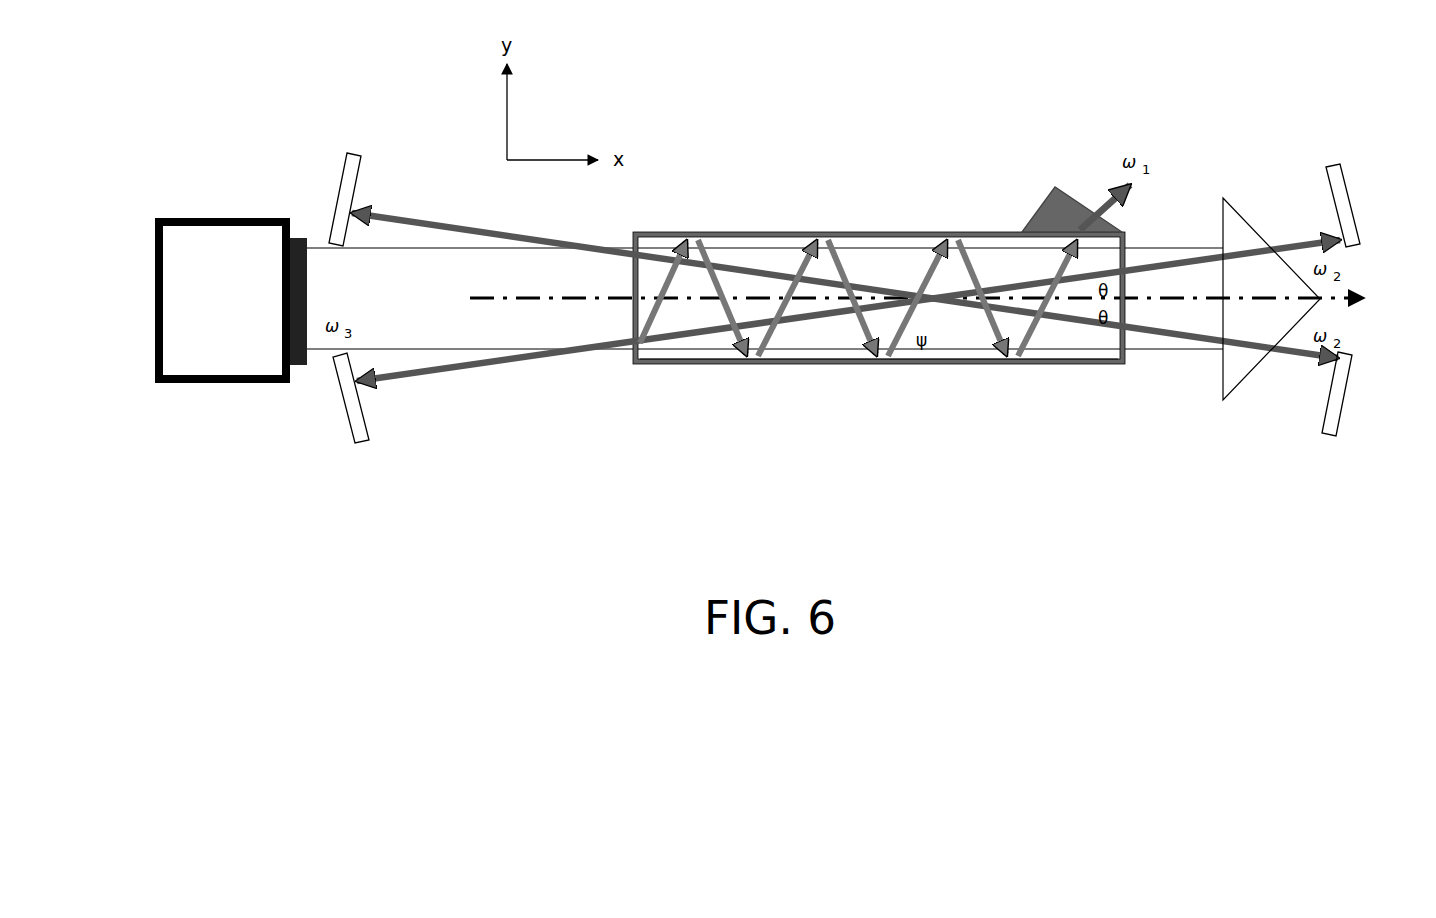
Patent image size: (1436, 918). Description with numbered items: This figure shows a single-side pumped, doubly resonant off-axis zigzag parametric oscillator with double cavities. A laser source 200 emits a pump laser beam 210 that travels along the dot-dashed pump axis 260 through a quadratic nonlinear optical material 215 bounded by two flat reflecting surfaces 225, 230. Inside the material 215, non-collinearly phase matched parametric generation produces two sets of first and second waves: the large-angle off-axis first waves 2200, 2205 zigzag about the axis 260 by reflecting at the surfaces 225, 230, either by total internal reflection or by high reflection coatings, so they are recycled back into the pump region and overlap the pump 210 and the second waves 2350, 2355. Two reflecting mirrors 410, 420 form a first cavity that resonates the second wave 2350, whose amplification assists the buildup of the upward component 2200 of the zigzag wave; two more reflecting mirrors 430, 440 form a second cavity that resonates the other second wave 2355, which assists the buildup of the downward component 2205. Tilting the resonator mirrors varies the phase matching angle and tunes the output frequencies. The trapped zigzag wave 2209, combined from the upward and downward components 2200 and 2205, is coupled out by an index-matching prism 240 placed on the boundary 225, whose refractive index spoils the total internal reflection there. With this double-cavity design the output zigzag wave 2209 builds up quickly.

The laser source 200 is at (222, 300).
The pump laser beam 210 is at (320, 356).
The pump axis 260 is at (943, 298).
The flat reflecting surface 225 is at (872, 228).
The flat reflecting surface 230 is at (947, 370).
The parametrically generated second wave 2355 is at (1302, 228).
The parametrically generated second wave 2350 is at (1302, 366).
The reflecting mirror 410 is at (368, 170).
The reflecting mirror 430 is at (374, 426).
The reflecting mirror 440 is at (1346, 177).
The reflecting mirror 420 is at (1316, 429).
The quadratic nonlinear optical material 215 is at (712, 343).
The parametrically generated first wave 2200 is at (799, 265).
The parametrically generated first wave 2205 is at (858, 335).
The index-matching prism 240 is at (1030, 200).
The zigzag wave 2209 is at (1146, 201).